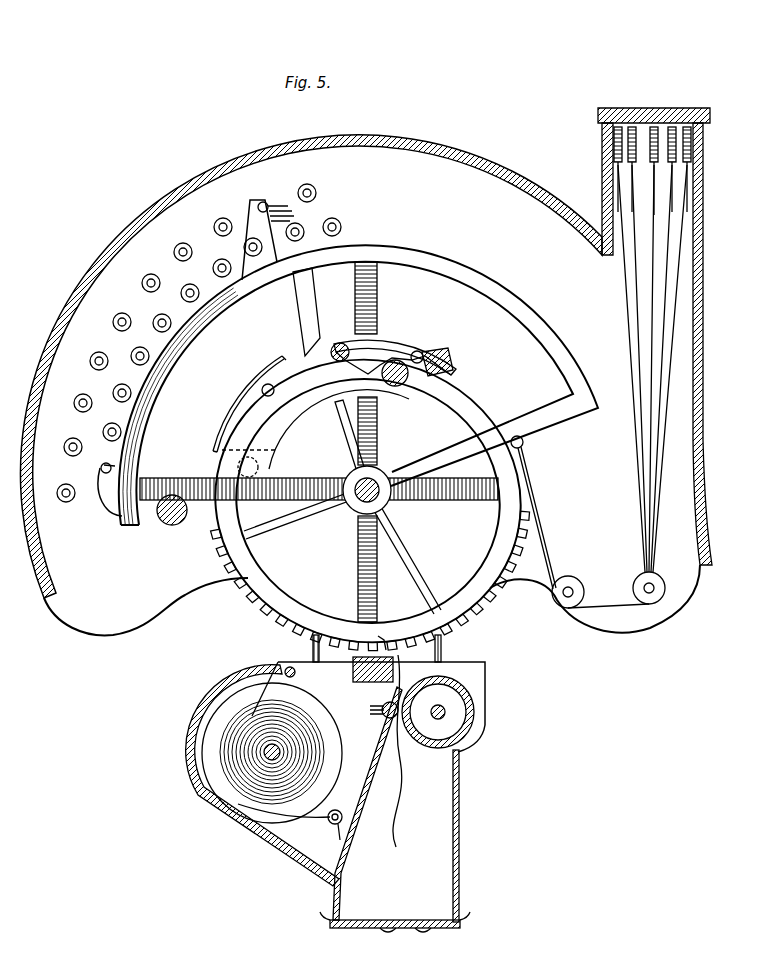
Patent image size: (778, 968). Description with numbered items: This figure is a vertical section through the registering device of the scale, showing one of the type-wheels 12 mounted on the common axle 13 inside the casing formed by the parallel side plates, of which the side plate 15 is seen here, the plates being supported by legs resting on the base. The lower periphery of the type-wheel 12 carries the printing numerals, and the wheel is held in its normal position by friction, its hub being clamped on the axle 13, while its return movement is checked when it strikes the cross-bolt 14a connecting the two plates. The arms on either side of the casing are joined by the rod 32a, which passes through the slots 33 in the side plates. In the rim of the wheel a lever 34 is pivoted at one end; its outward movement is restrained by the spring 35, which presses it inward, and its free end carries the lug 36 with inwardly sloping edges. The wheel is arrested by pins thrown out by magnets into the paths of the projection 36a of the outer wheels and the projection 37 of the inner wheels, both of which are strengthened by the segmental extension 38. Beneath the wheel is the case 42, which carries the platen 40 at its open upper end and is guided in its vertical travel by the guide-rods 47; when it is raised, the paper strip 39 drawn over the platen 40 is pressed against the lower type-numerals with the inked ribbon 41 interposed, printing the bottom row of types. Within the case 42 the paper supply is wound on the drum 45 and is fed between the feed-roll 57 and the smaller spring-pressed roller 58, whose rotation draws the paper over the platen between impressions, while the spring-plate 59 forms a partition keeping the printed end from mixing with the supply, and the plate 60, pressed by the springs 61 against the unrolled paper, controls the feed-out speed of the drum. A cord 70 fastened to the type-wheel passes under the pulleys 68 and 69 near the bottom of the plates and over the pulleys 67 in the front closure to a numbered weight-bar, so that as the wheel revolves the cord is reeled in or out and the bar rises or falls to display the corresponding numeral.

The type-wheel 12 is at (281, 480).
The common axle 13 is at (390, 508).
The cross-bolt 14a is at (170, 524).
The side plate 15 is at (113, 628).
The rod 32a is at (404, 386).
The slot 33 is at (339, 429).
The lever 34 is at (406, 350).
The spring 35 is at (382, 342).
The lug 36 is at (362, 368).
The projection 36a is at (103, 489).
The projection 37 is at (257, 203).
The segmental extension 38 is at (485, 278).
The paper strip 39 is at (395, 812).
The platen 40 is at (353, 677).
The inked ribbon 41 is at (380, 652).
The case 42 is at (456, 846).
The drum 45 is at (343, 746).
The guide-rod 47 is at (312, 645).
The feed-roll 57 is at (476, 710).
The roller 58 is at (390, 716).
The spring-plate 59 is at (356, 858).
The plate 60 is at (329, 822).
The spring 61 is at (339, 841).
The pulley 67 is at (680, 128).
The pulley 68 is at (576, 580).
The pulley 69 is at (647, 578).
The cord 70 is at (662, 300).